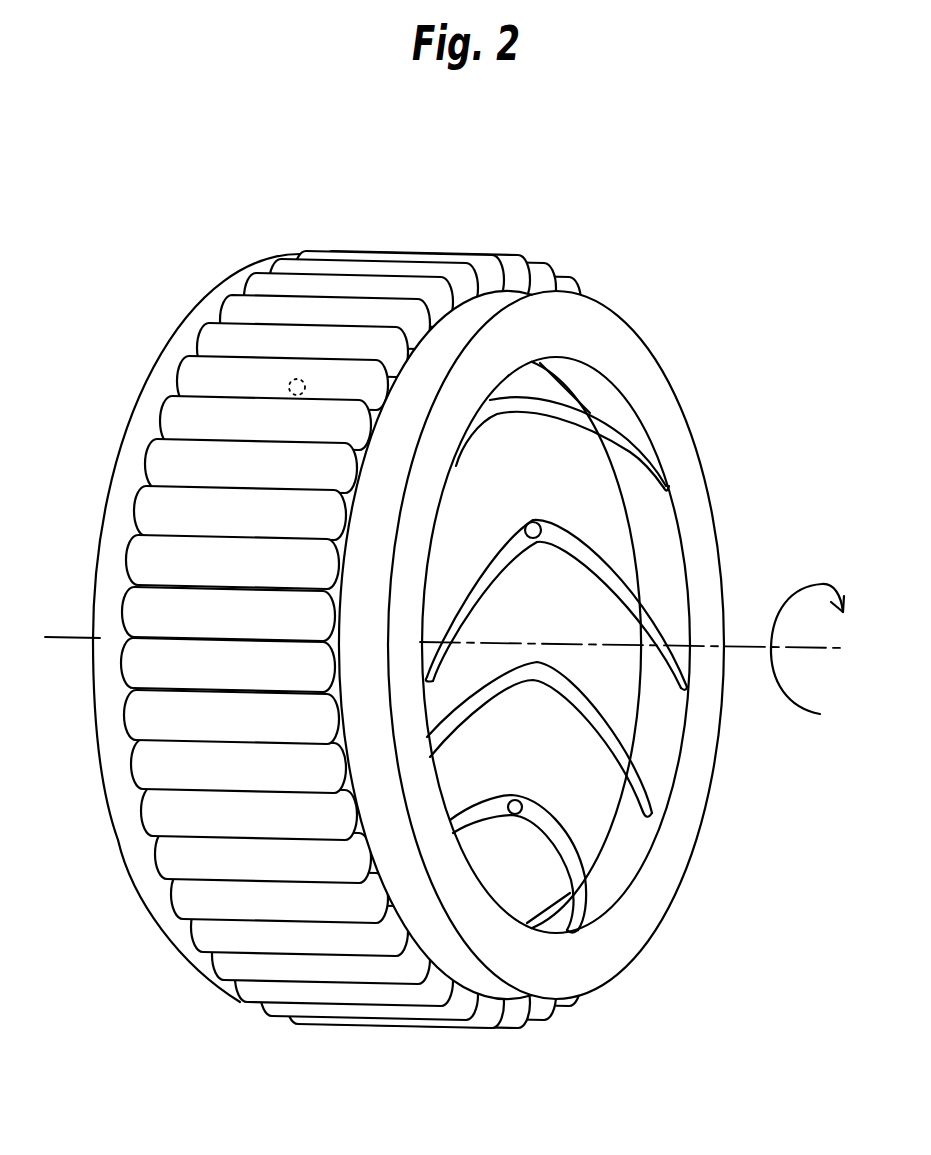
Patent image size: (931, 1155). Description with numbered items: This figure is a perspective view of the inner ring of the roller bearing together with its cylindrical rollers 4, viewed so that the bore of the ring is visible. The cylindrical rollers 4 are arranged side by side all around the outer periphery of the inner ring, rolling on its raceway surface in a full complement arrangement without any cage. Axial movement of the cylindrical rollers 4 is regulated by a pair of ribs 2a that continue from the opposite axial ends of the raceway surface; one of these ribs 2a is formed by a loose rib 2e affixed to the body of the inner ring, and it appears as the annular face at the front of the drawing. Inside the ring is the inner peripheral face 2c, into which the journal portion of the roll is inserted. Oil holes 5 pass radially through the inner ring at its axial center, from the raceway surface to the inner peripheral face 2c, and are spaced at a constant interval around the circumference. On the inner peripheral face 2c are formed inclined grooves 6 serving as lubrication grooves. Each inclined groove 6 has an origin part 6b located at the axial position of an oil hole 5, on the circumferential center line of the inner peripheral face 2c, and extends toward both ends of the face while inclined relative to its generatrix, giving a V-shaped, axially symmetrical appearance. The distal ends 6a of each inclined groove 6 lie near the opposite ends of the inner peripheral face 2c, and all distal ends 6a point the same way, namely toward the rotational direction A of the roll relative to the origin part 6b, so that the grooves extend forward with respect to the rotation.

The ribs 2a is at (468, 340).
The inner peripheral face 2c is at (548, 903).
The loose rib 2e is at (615, 358).
The cylindrical rollers 4 is at (152, 565).
The oil holes 5 is at (285, 402).
The inclined grooves 6 is at (587, 408).
The distal ends 6a is at (645, 460).
The origin part 6b is at (537, 672).
The rotational direction A is at (807, 635).